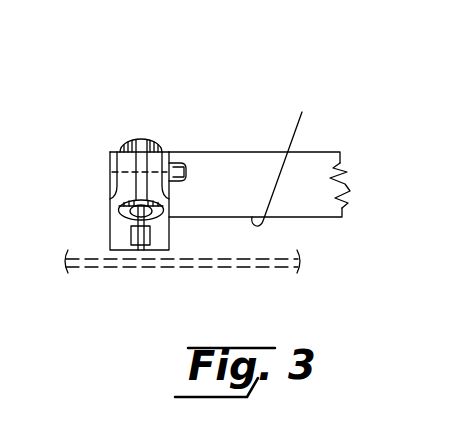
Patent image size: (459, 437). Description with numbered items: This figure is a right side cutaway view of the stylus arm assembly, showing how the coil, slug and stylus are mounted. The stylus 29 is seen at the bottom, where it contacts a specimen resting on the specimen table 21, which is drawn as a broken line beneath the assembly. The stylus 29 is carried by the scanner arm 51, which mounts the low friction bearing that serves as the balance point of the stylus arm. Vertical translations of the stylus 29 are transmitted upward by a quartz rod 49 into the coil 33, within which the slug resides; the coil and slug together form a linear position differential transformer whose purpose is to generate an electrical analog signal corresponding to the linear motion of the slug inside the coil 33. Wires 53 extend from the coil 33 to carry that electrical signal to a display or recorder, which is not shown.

The specimen table 21 is at (235, 269).
The stylus 29 is at (137, 249).
The coil 33 is at (143, 139).
The quartz rod 49 is at (166, 220).
The scanner arm 51 is at (110, 172).
The wires 53 is at (252, 151).